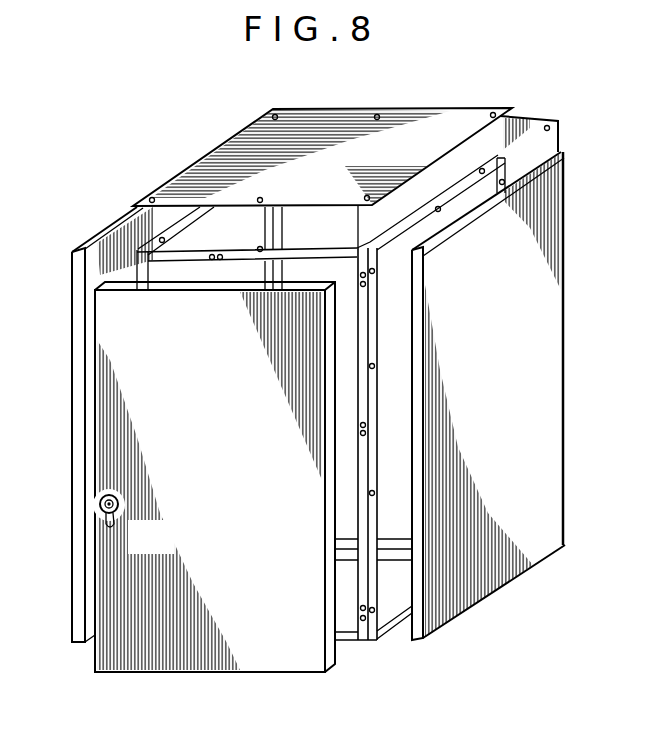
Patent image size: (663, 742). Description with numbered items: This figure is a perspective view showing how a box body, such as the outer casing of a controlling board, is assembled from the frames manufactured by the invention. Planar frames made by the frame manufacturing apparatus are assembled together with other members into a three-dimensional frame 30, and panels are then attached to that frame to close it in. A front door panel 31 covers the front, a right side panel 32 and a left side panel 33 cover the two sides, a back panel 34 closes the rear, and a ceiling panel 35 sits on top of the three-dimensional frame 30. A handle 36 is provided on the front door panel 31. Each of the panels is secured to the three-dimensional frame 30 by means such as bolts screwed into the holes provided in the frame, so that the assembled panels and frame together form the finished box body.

The three-dimensional frame 30 is at (392, 623).
The front door panel 31 is at (173, 673).
The right side panel 32 is at (488, 592).
The left side panel 33 is at (82, 340).
The back panel 34 is at (558, 128).
The ceiling panel 35 is at (428, 108).
The handle 36 is at (117, 512).